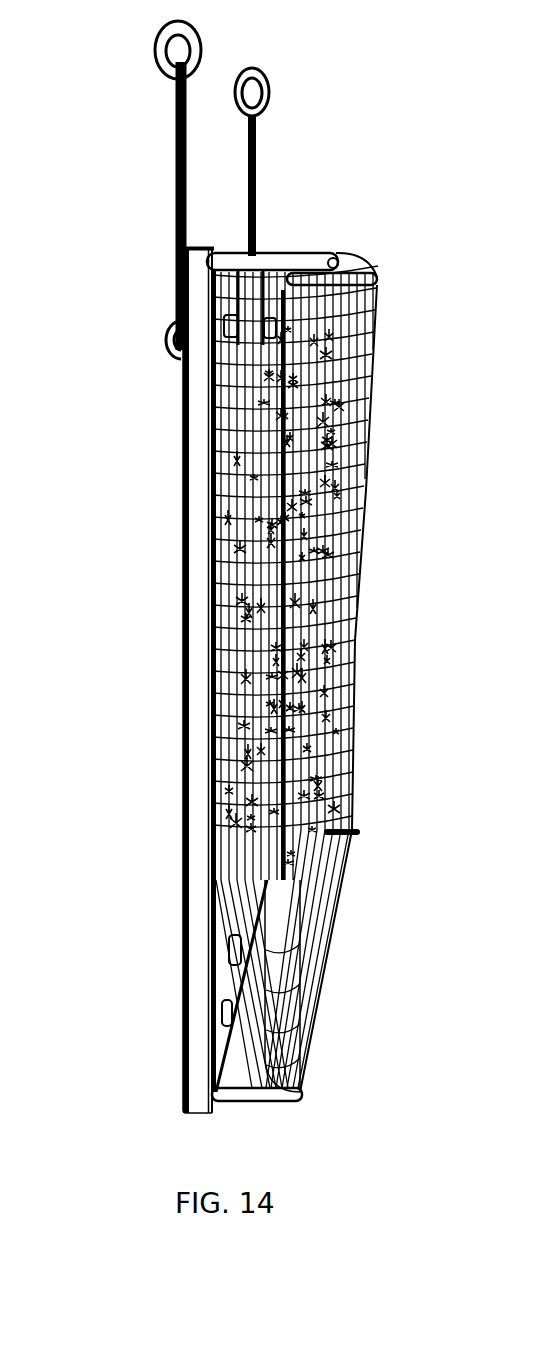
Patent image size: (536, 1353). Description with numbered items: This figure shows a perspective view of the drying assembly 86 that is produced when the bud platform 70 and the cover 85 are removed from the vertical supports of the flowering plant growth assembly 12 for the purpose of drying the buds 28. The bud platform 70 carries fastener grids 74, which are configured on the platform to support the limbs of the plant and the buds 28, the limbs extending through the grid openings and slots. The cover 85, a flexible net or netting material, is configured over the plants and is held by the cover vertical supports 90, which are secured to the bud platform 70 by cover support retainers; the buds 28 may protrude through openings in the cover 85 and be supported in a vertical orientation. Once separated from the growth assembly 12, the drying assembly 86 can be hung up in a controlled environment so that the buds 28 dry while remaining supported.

The flowering plant growth assembly 12 is at (368, 362).
The buds 28 is at (352, 610).
The bud platform 70 is at (190, 688).
The fastener grid 74 is at (203, 903).
The cover 85 is at (350, 541).
The drying assembly 86 is at (130, 290).
The cover vertical supports 90 is at (263, 263).